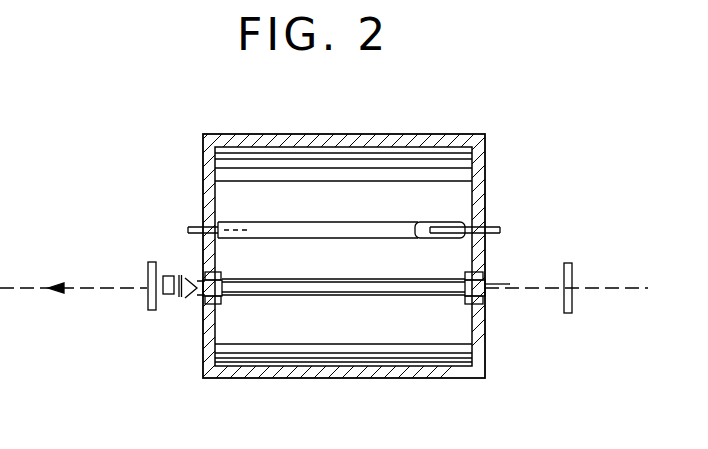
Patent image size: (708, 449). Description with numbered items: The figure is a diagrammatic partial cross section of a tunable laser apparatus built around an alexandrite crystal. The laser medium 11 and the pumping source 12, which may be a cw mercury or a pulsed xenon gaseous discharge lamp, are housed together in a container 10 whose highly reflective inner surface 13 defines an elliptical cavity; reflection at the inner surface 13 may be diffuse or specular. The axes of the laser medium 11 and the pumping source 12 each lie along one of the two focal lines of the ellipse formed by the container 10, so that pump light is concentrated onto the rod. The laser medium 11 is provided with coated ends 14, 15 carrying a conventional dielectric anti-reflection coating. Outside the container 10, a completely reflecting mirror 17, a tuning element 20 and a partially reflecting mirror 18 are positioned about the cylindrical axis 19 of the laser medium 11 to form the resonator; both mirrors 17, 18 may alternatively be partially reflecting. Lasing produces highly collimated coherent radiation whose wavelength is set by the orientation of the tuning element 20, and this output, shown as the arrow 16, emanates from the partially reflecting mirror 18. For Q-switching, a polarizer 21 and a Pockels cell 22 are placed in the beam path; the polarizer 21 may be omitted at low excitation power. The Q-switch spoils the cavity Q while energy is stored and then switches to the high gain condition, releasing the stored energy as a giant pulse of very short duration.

The container 10 is at (448, 135).
The laser medium 11 is at (342, 283).
The pumping source 12 is at (324, 226).
The reflective inner surface 13 is at (292, 150).
The coated end 14 is at (210, 283).
The coated end 15 is at (461, 287).
The arrow (emitted radiation) 16 is at (63, 284).
The completely reflecting mirror 17 is at (569, 295).
The partially reflecting mirror 18 is at (148, 303).
The cylindrical axis 19 is at (637, 289).
The tuning element 20 is at (195, 298).
The polarizer 21 is at (182, 298).
The Pockels cell 22 is at (168, 276).